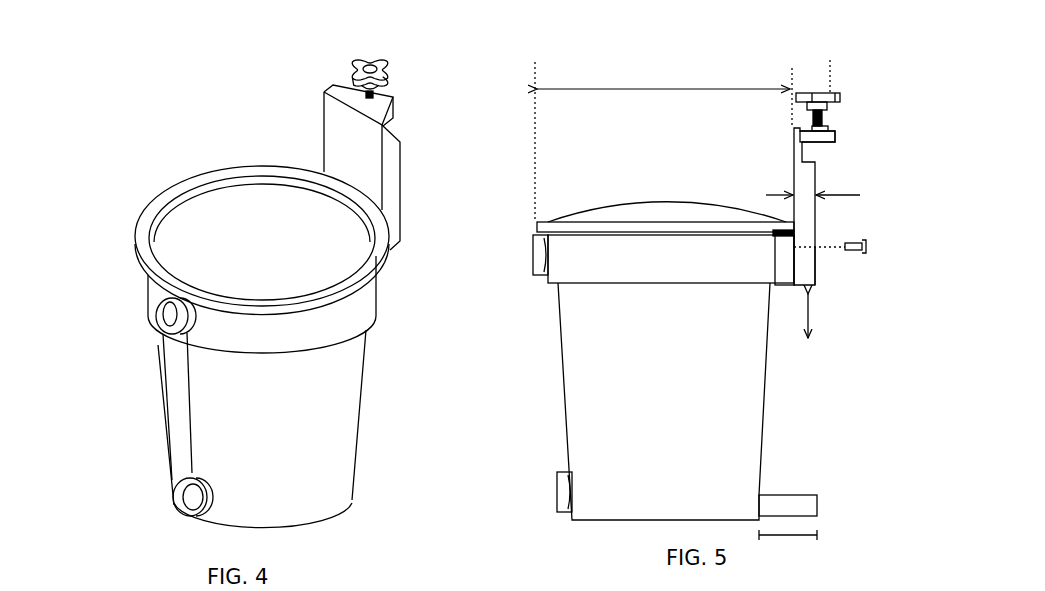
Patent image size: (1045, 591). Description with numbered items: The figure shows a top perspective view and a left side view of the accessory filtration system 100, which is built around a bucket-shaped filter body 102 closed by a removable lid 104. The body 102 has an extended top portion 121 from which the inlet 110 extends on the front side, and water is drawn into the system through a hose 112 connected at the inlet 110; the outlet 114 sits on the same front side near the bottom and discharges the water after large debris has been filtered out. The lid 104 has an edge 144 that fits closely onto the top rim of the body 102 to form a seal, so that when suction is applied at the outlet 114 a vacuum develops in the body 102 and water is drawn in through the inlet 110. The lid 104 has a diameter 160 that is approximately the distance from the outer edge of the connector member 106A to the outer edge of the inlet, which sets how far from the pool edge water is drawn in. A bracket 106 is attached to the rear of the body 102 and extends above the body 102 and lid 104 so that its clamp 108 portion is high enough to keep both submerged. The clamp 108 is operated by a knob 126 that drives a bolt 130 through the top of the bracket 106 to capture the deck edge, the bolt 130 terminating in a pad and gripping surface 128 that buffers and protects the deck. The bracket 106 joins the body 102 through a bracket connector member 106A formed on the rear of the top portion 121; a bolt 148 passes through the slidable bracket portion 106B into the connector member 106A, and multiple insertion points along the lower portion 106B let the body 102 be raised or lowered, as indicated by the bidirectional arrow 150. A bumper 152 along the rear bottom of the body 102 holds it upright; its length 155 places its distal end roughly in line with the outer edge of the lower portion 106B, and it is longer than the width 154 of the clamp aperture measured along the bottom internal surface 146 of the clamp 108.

In FIG. 4, the accessory filtration system 100 is at (128, 134).
In FIG. 4, the filter body 102 is at (366, 392).
In FIG. 5, the filter body 102 is at (767, 400).
In FIG. 4, the removable lid 104 is at (265, 200).
In FIG. 5, the removable lid 104 is at (668, 212).
In FIG. 4, the bracket 106 is at (402, 196).
In FIG. 5, the bracket connector member 106A is at (785, 272).
In FIG. 5, the slidable bracket portion 106B is at (816, 212).
In FIG. 4, the clamp 108 is at (399, 92).
In FIG. 4, the inlet 110 is at (158, 322).
In FIG. 5, the hose 112 is at (533, 262).
In FIG. 4, the outlet 114 is at (180, 508).
In FIG. 5, the outlet 114 is at (557, 490).
In FIG. 4, the extended top portion 121 is at (373, 302).
In FIG. 5, the extended top portion 121 is at (566, 266).
In FIG. 5, the knob 126 is at (842, 92).
In FIG. 5, the pad and gripping surface 128 is at (832, 128).
In FIG. 5, the bolt 130 is at (824, 108).
In FIG. 5, the edge 144 is at (823, 250).
In FIG. 4, the bottom internal surface 146 is at (394, 128).
In FIG. 5, the bottom internal surface 146 is at (812, 150).
In FIG. 5, the bolt 148 is at (857, 252).
In FIG. 5, the bidirectional arrow 150 is at (812, 318).
In FIG. 5, the bumper 152 is at (794, 510).
In FIG. 5, the width 154 is at (846, 195).
In FIG. 5, the length 155 is at (786, 538).
In FIG. 5, the diameter 160 is at (628, 89).